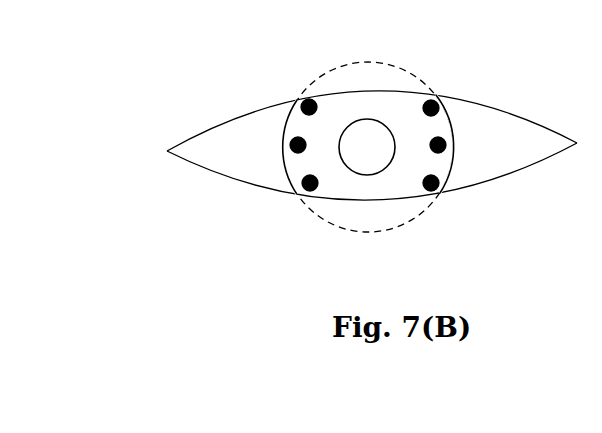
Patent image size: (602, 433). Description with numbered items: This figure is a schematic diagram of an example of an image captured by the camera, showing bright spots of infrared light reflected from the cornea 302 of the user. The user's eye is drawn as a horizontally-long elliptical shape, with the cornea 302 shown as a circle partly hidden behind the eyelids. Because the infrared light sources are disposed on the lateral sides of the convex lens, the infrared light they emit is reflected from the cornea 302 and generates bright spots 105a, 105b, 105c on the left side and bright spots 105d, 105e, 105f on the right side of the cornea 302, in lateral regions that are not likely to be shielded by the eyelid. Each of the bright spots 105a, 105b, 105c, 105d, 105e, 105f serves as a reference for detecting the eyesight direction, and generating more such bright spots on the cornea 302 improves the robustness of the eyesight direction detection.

The bright spot 105a is at (309, 100).
The bright spot 105b is at (297, 138).
The bright spot 105c is at (310, 189).
The bright spot 105d is at (433, 100).
The bright spot 105e is at (441, 137).
The bright spot 105f is at (431, 190).
The cornea 302 is at (382, 189).